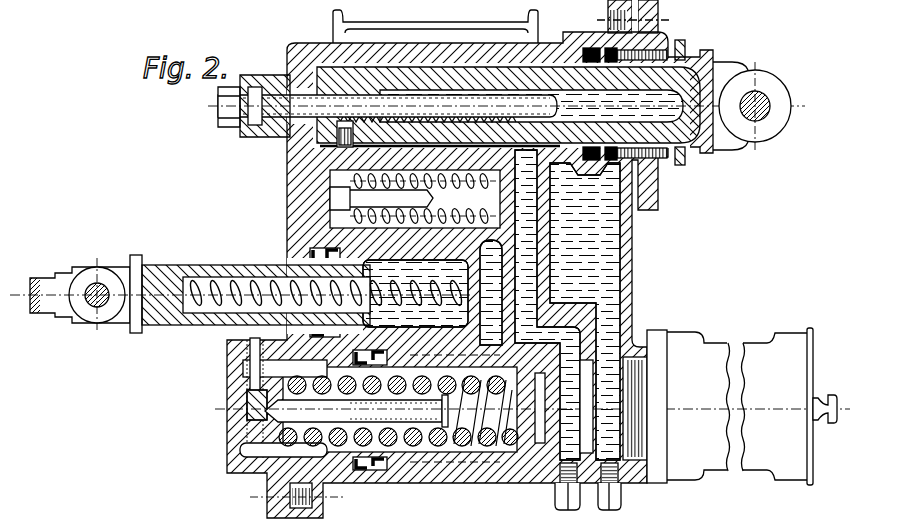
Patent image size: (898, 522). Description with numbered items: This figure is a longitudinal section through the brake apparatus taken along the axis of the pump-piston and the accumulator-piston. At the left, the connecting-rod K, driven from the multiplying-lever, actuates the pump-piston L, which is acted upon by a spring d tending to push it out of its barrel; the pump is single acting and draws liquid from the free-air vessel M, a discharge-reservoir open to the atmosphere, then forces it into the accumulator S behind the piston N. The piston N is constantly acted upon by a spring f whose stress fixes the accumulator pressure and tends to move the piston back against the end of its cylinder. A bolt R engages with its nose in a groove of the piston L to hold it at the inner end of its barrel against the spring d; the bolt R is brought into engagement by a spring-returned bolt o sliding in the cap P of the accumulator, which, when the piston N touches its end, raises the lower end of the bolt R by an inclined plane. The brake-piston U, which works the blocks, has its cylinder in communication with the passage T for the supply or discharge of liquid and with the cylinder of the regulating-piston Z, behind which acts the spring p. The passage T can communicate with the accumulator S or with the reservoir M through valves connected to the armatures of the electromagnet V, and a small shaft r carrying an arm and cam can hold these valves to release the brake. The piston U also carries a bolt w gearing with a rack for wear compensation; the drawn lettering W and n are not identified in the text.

The connecting-rod K is at (80, 295).
The pump-piston L is at (240, 289).
The hollow piston rod W is at (506, 105).
The pawl n is at (341, 147).
The regulating-piston Z is at (325, 248).
The spring p is at (415, 206).
The spring d is at (415, 293).
The accumulator S is at (491, 292).
The passage T is at (547, 305).
The free-air vessel M is at (585, 311).
The brake-piston U is at (752, 97).
The bolt R is at (285, 397).
The cap of the accumulator P is at (267, 423).
The bolt o is at (532, 411).
The spring f is at (398, 411).
The piston N is at (527, 408).
The shaft r is at (642, 408).
The electromagnet V is at (752, 406).